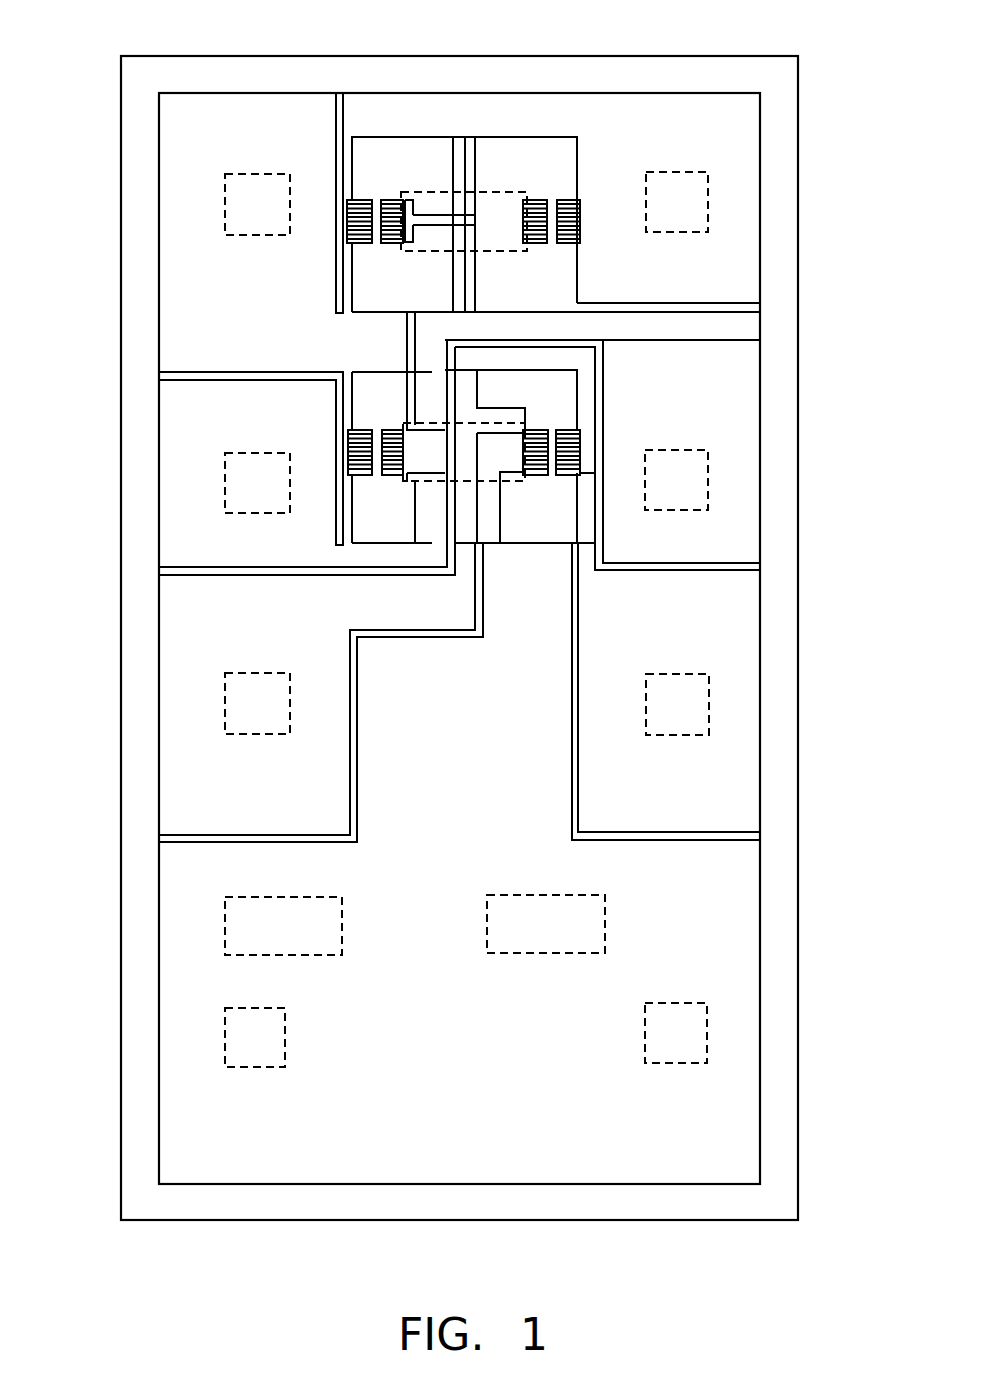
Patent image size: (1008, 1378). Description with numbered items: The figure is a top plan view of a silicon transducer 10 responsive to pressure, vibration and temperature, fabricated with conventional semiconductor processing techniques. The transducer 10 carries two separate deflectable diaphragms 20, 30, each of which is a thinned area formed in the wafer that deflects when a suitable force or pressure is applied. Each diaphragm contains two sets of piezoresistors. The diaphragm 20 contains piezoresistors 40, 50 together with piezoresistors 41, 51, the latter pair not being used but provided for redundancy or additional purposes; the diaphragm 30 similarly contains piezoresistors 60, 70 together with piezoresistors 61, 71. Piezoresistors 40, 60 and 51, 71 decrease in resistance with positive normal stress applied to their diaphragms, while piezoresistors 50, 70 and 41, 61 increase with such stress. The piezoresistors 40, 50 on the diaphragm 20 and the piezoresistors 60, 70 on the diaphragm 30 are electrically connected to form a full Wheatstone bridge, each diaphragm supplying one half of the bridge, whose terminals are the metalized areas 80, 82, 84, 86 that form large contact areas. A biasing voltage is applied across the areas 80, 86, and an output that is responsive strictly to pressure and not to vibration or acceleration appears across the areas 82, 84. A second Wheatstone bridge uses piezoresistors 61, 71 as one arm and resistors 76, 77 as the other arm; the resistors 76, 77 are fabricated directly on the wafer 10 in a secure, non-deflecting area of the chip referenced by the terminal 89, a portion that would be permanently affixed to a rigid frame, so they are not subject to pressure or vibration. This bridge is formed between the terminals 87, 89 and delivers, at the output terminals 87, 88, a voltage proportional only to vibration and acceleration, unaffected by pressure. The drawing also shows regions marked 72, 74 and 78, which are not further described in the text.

The transducer 10 is at (837, 613).
The deflectable diaphragm 20 is at (560, 143).
The deflectable diaphragm 30 is at (555, 380).
The piezoresistor 40 is at (357, 247).
The piezoresistor 41 is at (580, 237).
The piezoresistor 50 is at (395, 198).
The piezoresistor 51 is at (537, 197).
The piezoresistor 60 is at (356, 478).
The piezoresistor 61 is at (568, 428).
The piezoresistor 70 is at (400, 428).
The piezoresistor 71 is at (540, 476).
The upper right compartment 72 is at (720, 275).
The middle left compartment 74 is at (218, 419).
The external resistor 76 is at (845, 406).
The external resistor 77 is at (546, 924).
The upper left compartment 78 is at (218, 299).
The terminal pad 80 is at (257, 204).
The terminal pad 82 is at (677, 202).
The terminal pad 84 is at (257, 483).
The terminal pad 86 is at (676, 480).
The terminal 87 is at (677, 704).
The terminal 88 is at (257, 703).
The terminal 89 is at (255, 1037).